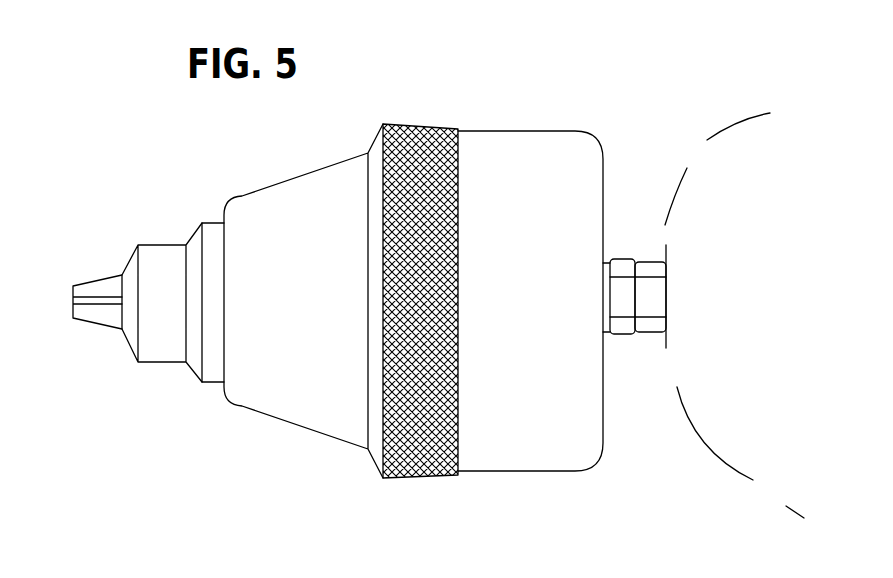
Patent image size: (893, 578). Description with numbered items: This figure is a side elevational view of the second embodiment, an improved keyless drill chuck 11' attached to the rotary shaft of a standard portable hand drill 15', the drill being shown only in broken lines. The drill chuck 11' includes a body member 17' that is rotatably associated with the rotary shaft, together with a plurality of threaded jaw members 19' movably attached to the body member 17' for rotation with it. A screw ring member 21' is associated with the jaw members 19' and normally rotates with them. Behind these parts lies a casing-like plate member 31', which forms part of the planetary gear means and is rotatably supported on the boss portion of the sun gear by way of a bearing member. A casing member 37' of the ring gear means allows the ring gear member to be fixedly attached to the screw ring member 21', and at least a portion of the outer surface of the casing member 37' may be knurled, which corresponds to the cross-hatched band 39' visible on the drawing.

The keyless drill chuck 11' is at (438, 306).
The portable hand drill 15' is at (734, 306).
The body member 17' is at (154, 291).
The threaded jaw members 19' is at (97, 300).
The screw ring member 21' is at (194, 277).
The casing-like plate member 31' is at (562, 282).
The casing member 37' is at (303, 300).
The knurled ring 39' is at (434, 286).